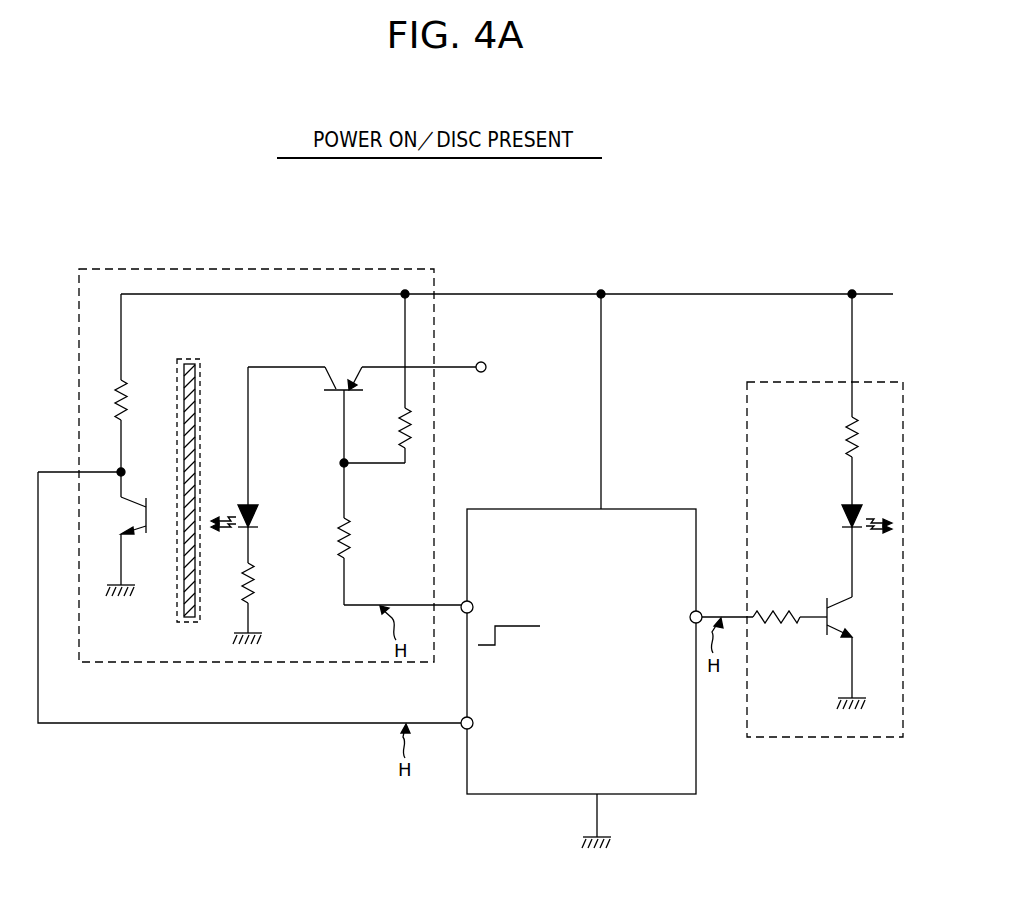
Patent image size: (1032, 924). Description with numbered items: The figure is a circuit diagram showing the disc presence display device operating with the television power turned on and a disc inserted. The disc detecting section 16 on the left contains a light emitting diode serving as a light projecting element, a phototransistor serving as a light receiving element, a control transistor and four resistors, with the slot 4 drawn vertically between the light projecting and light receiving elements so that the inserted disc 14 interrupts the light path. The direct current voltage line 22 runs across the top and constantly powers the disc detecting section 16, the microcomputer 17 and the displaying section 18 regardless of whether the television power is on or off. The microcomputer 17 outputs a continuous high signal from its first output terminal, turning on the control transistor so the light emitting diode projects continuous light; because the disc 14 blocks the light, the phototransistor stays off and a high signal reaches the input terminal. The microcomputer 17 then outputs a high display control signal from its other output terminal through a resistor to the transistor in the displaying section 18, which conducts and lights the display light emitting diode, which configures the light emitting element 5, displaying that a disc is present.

The slot 4 is at (183, 359).
The disc 14 is at (184, 604).
The disc detecting section 16 is at (400, 269).
The microcomputer 17 is at (643, 509).
The displaying section 18 is at (768, 382).
The direct current voltage line 22 is at (705, 294).
The light emitting element 5 is at (836, 528).